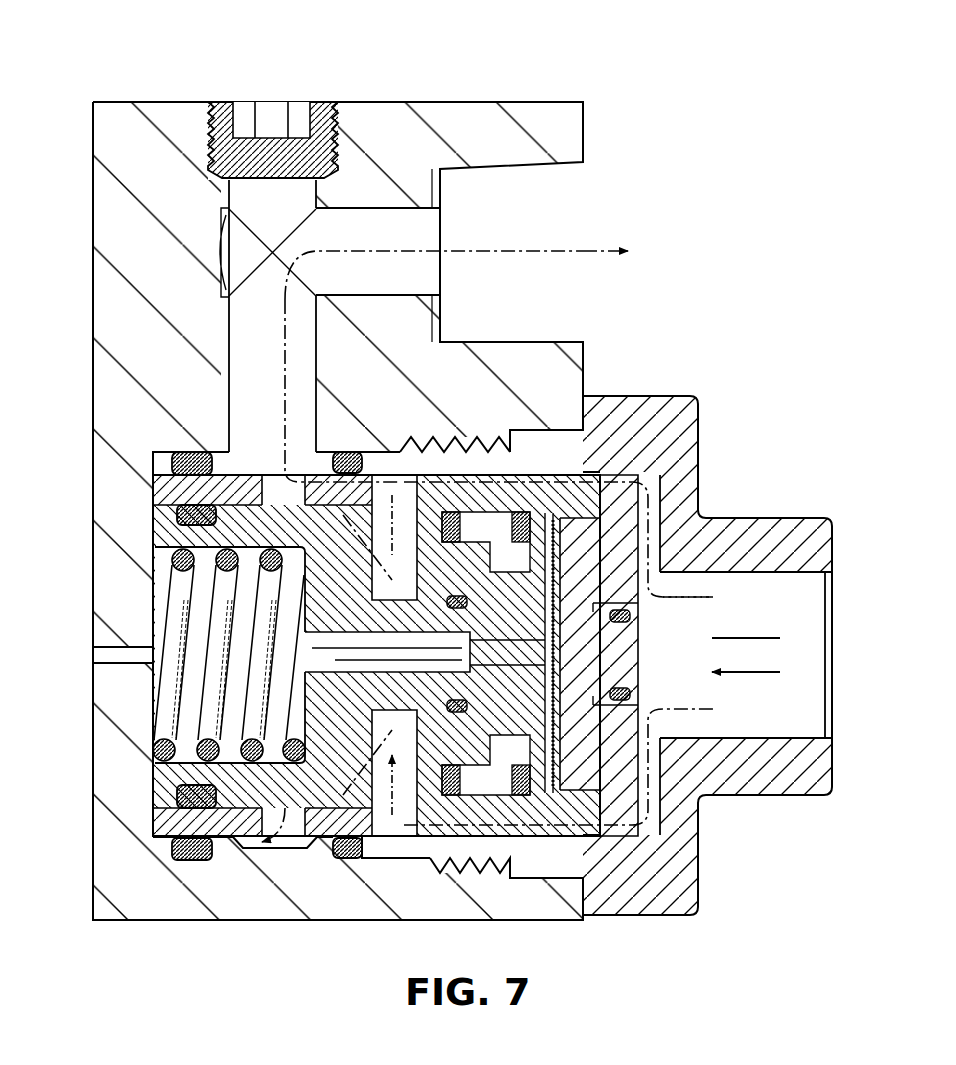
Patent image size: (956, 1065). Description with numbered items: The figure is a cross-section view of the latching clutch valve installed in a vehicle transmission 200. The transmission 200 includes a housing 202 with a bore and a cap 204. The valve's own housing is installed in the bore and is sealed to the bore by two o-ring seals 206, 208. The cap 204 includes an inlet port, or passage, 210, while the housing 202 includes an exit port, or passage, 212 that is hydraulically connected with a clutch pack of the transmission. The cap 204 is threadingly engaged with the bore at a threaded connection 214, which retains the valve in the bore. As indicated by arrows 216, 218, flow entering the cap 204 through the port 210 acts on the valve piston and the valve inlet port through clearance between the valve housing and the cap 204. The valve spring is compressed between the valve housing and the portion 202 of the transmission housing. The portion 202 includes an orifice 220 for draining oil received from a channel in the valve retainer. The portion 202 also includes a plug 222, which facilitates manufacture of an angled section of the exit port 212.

The transmission 200 is at (88, 95).
The housing 202 is at (390, 112).
The cap 204 is at (812, 537).
The o-ring seal 206 is at (185, 455).
The o-ring seal 208 is at (350, 455).
The inlet port 210 is at (810, 607).
The exit port 212 is at (560, 300).
The threaded connection 214 is at (487, 418).
The arrow 216 is at (722, 530).
The arrow 218 is at (745, 678).
The orifice 220 is at (110, 655).
The plug 222 is at (268, 140).